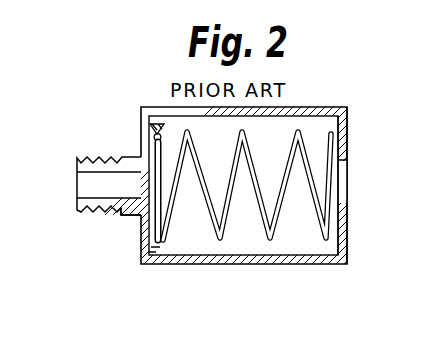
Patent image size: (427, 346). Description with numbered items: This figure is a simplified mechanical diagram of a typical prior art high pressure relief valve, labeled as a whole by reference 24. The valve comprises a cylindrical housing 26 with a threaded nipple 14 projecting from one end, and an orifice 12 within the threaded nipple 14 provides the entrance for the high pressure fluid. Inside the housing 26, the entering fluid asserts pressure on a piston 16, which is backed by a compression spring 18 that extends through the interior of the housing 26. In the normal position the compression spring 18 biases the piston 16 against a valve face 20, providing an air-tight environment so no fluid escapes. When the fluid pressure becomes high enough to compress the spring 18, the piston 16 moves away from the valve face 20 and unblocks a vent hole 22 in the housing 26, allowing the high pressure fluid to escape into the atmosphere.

The orifice 12 is at (82, 187).
The threaded nipple 14 is at (114, 215).
The piston 16 is at (152, 136).
The compression spring 18 is at (261, 222).
The valve face 20 is at (151, 238).
The vent hole 22 is at (345, 175).
The prior art spring assembly 24 is at (227, 170).
The cylindrical housing 26 is at (322, 108).